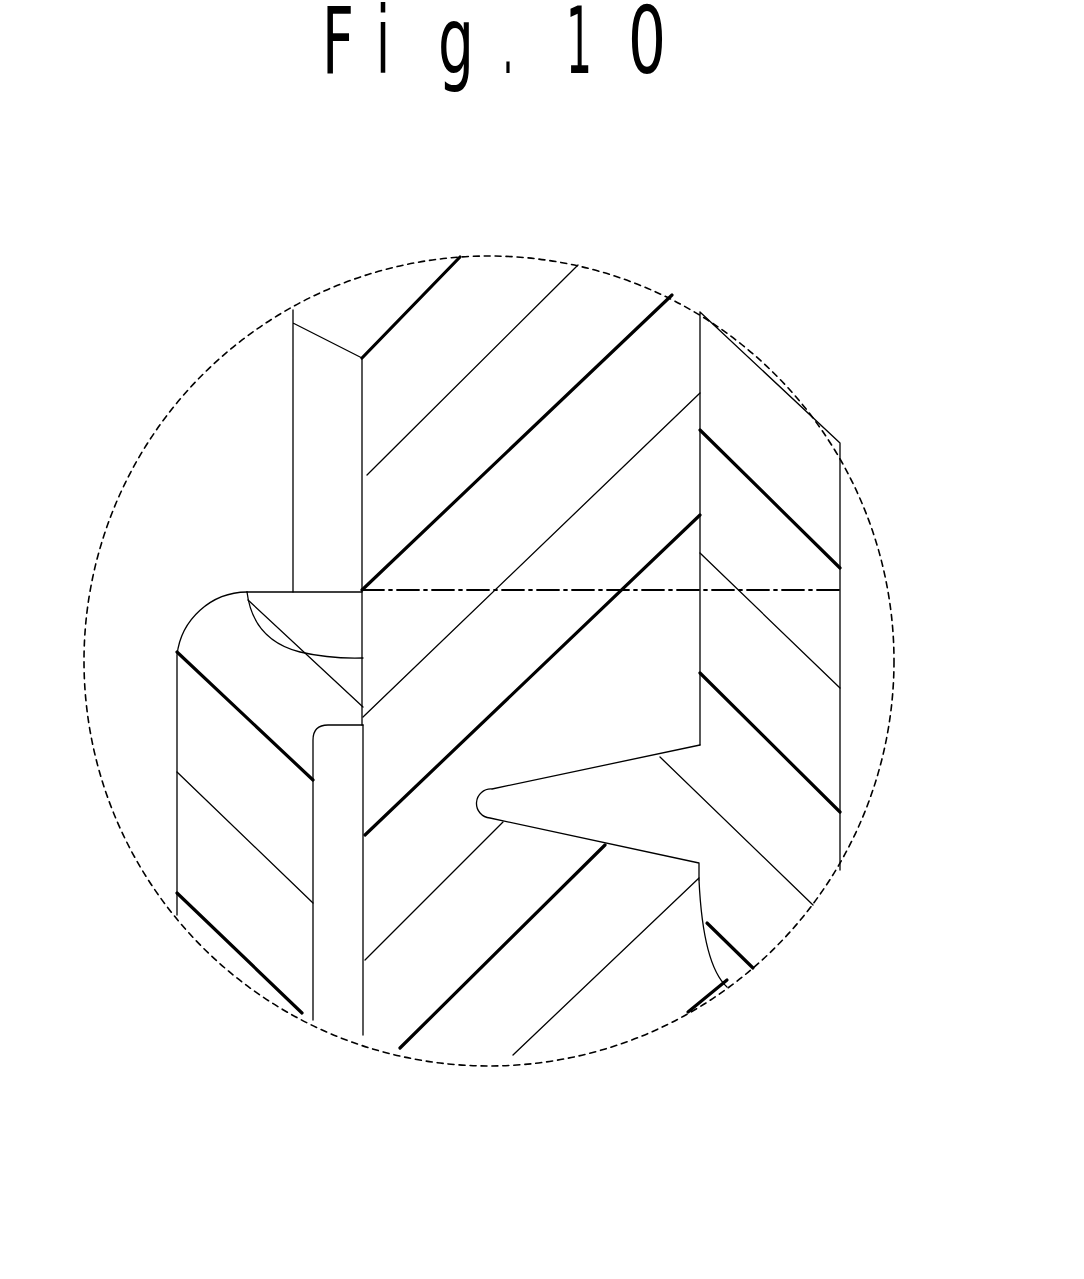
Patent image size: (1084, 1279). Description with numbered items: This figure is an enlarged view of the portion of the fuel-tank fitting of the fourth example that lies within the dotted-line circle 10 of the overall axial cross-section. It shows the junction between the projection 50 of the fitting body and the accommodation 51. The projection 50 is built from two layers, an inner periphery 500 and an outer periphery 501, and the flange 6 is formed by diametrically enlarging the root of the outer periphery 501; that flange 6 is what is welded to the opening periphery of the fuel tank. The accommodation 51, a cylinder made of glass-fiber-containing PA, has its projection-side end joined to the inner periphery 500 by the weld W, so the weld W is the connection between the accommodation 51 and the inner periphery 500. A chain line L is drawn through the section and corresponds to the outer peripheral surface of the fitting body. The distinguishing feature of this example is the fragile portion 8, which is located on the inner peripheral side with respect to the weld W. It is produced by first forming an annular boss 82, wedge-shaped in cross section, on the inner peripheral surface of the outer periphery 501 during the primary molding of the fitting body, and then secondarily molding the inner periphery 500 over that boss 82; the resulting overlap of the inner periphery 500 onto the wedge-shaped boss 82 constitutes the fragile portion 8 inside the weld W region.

The flange 6 is at (395, 298).
The circle 10 is at (190, 390).
The weld W is at (247, 592).
The line L is at (601, 590).
The accommodation 51 is at (215, 893).
The inner periphery 500 is at (405, 1018).
The fragile portion 8 is at (430, 810).
The annular boss 82 is at (538, 807).
The outer periphery 501 is at (783, 903).
The projection 50 is at (685, 1160).